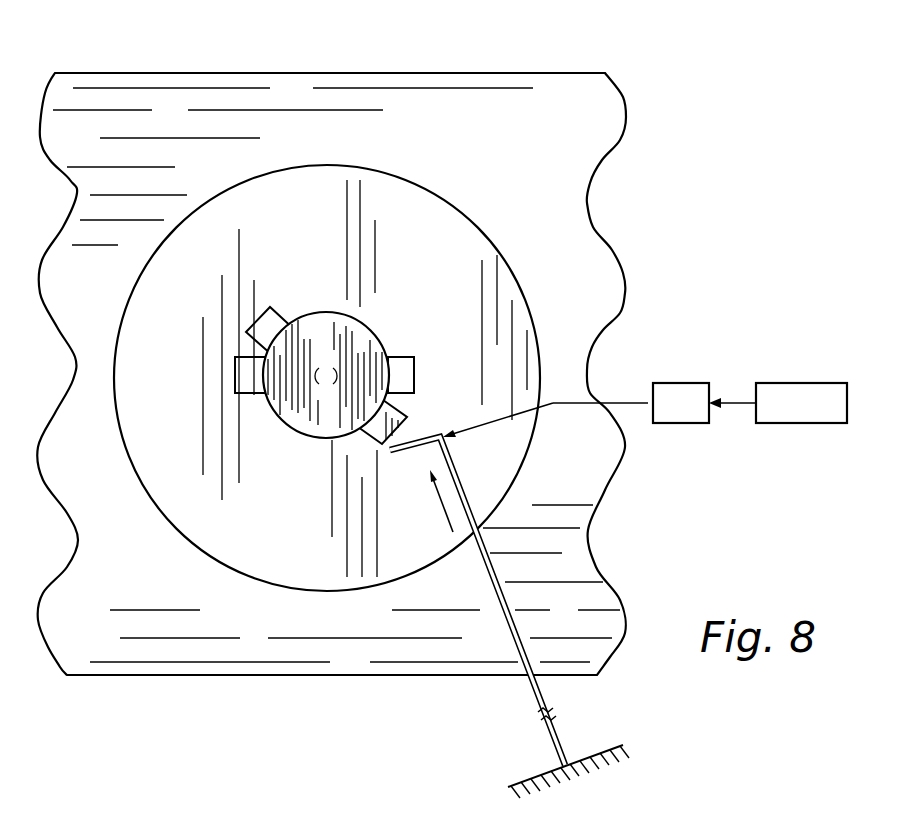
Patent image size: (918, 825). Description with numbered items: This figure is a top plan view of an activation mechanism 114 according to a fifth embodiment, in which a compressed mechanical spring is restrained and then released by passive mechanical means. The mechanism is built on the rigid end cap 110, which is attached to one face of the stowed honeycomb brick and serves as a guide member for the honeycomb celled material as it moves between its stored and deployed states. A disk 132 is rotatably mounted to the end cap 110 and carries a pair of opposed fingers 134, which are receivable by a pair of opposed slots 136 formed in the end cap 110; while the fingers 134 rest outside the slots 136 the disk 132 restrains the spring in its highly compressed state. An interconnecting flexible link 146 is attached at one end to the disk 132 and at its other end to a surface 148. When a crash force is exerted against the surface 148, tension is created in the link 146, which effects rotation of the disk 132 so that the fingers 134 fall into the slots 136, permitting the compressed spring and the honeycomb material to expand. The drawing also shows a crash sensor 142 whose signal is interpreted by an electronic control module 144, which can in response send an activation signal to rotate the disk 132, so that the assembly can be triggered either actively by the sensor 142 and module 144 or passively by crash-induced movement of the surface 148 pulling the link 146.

The end cap 110 is at (580, 137).
The activation mechanism 114 is at (173, 398).
The disk 132 is at (370, 317).
The fingers 134 is at (277, 312).
The slots 136 is at (250, 377).
The crash sensor 142 is at (803, 383).
The electronic control module 144 is at (682, 383).
The interconnecting flexible link 146 is at (458, 478).
The surface 148 is at (532, 778).